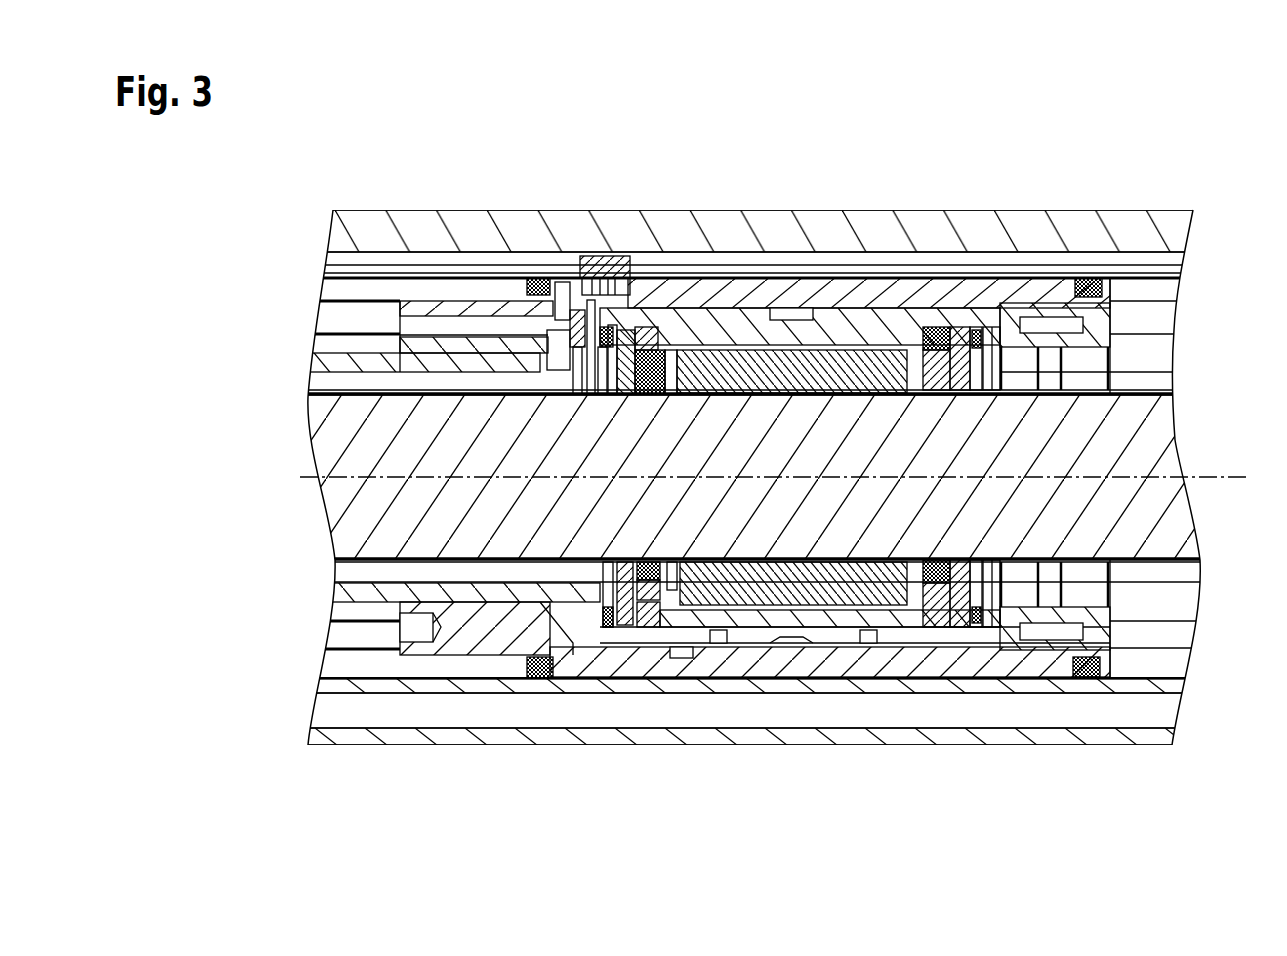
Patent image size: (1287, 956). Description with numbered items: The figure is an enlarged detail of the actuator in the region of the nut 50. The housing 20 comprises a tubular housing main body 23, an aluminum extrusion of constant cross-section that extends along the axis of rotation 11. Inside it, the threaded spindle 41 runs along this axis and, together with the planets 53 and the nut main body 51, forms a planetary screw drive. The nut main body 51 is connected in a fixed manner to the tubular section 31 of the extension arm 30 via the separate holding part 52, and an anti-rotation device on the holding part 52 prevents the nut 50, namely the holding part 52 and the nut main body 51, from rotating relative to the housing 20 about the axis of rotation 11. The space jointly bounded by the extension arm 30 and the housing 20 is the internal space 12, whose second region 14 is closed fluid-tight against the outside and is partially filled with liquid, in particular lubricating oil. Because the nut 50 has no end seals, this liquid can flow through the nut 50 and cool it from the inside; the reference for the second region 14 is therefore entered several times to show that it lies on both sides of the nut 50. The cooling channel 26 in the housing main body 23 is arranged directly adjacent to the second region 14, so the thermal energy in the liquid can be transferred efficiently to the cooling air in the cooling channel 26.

The axis of rotation 11 is at (1246, 485).
The internal space 12 is at (1162, 318).
The second region 14 is at (762, 458).
The housing 20 is at (755, 193).
The housing main body 23 is at (627, 220).
The cooling channel 26 is at (860, 712).
The extension arm 30 is at (379, 340).
The tubular section 31 is at (327, 360).
The threaded spindle 41 is at (345, 463).
The nut 50 is at (830, 714).
The nut main body 51 is at (678, 632).
The holding part 52 is at (463, 632).
The planets 53 is at (753, 360).